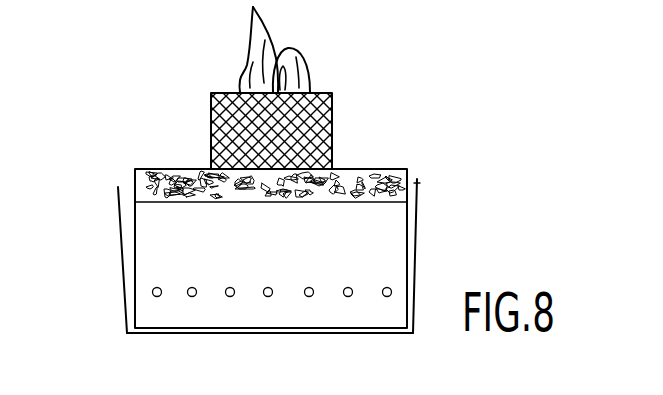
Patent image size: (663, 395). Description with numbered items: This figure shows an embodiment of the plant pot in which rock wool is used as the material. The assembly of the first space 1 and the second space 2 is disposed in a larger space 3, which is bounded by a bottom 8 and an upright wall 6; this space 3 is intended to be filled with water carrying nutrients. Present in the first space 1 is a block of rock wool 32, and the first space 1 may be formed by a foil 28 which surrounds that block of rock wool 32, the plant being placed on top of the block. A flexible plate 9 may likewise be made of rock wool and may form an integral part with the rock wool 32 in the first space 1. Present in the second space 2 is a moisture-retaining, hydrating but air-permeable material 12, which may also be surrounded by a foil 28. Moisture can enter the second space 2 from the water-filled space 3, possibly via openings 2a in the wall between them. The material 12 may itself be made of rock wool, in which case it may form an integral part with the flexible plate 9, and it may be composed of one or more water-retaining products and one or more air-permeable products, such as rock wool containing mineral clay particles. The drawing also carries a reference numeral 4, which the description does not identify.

The first space 1 is at (322, 92).
The second space 2 is at (308, 256).
The openings 2a is at (230, 297).
The space 3 is at (417, 186).
The fuel block 4 is at (211, 127).
The upright wall 6 is at (419, 216).
The bottom 8 is at (150, 334).
The flexible plate 9 is at (162, 170).
The moisture-retaining, hydrating but air-permeable material 12 is at (234, 370).
The foil 28 is at (133, 249).
The block of rock wool 32 is at (226, 93).